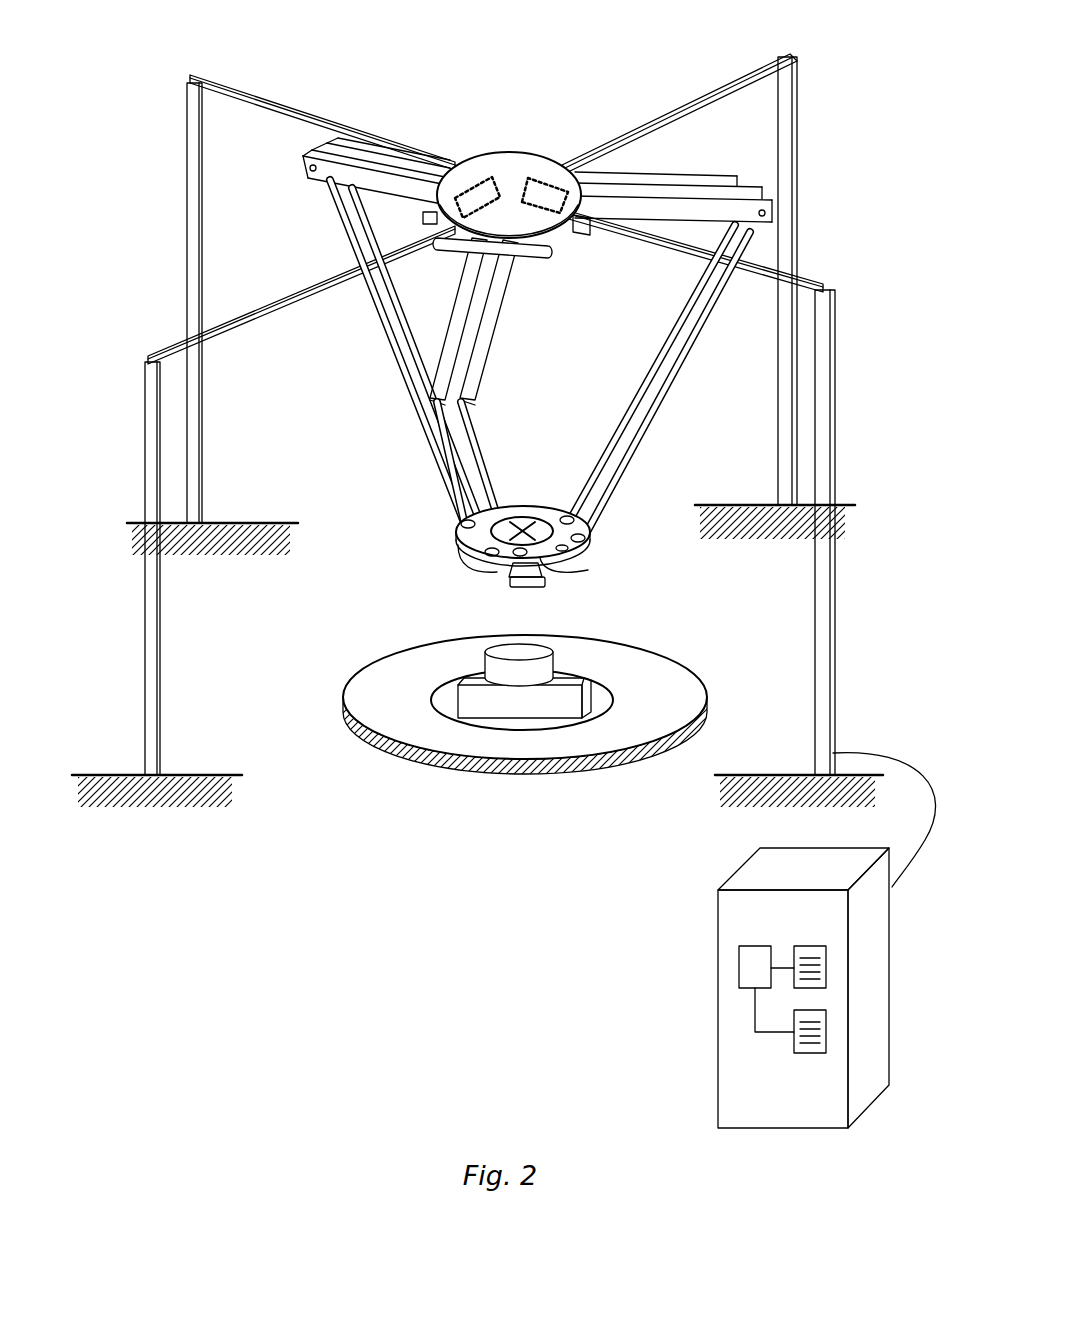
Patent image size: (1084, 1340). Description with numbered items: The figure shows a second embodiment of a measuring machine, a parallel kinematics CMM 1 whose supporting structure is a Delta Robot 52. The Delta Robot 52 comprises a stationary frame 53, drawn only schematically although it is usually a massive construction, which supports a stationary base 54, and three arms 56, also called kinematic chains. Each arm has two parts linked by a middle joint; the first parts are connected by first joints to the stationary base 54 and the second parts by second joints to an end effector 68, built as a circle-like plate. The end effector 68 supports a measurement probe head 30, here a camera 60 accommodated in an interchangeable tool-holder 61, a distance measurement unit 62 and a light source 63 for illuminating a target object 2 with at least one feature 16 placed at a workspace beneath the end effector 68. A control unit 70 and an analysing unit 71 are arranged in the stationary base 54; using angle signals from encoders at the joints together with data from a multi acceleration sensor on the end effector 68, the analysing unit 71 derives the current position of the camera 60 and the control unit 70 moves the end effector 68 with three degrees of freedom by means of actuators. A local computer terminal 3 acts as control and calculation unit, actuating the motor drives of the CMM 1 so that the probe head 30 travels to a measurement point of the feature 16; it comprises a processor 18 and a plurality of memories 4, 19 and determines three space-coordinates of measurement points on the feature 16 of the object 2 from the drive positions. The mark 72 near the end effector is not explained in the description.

The parallel kinematics CMM 1 is at (626, 90).
The target object 2 is at (588, 732).
The local computer terminal 3 is at (778, 940).
The memory 4 is at (731, 1032).
The feature 16 is at (513, 665).
The processor 18 is at (696, 953).
The memory 19 is at (724, 929).
The measurement probe head 30 is at (519, 489).
The Delta Robot 52 is at (404, 432).
The stationary frame 53 is at (284, 98).
The stationary base 54 is at (508, 172).
The arm 56 is at (655, 413).
The camera 60 is at (512, 580).
The tool-holder 61 is at (546, 532).
The distance measurement unit 62 is at (459, 536).
The light source 63 is at (566, 589).
The end effector 68 is at (567, 543).
The control unit 70 is at (468, 196).
The analysing unit 71 is at (542, 203).
The center mark 72 is at (526, 527).